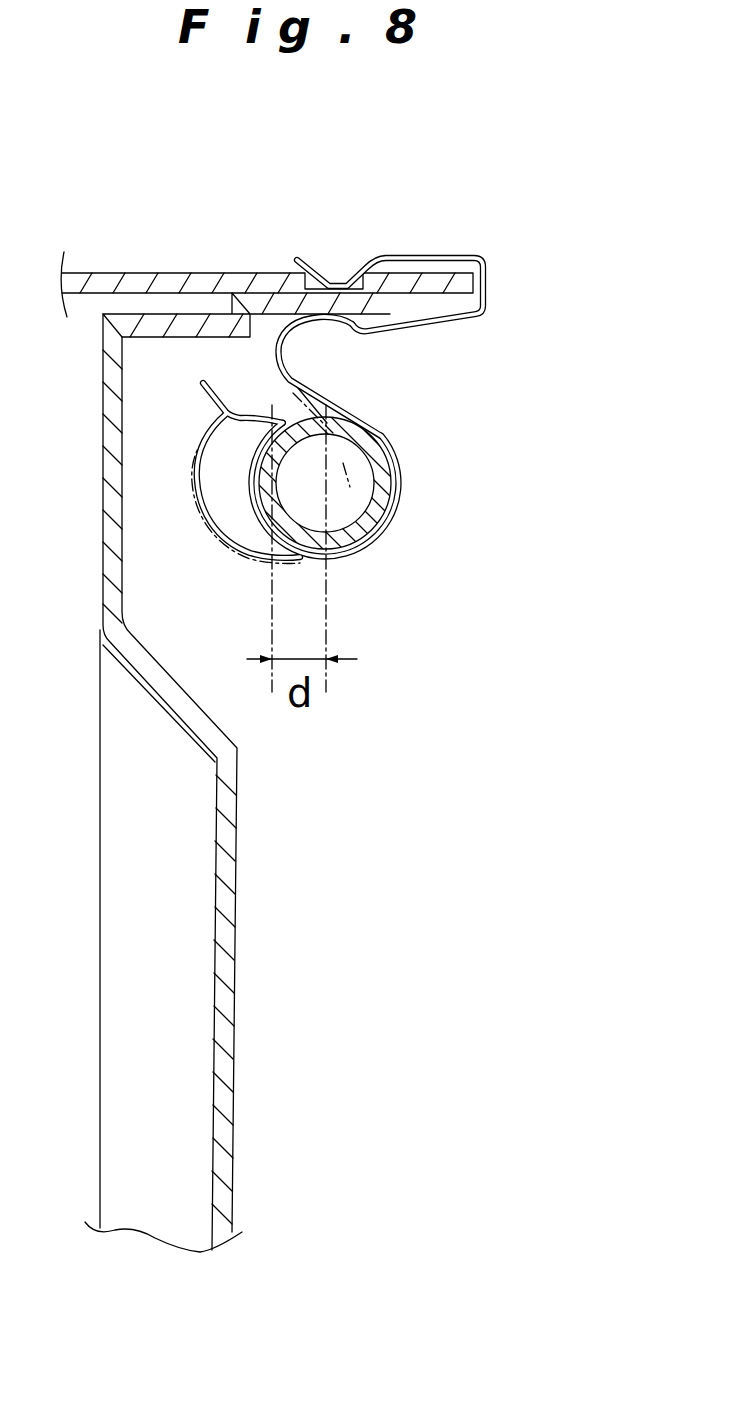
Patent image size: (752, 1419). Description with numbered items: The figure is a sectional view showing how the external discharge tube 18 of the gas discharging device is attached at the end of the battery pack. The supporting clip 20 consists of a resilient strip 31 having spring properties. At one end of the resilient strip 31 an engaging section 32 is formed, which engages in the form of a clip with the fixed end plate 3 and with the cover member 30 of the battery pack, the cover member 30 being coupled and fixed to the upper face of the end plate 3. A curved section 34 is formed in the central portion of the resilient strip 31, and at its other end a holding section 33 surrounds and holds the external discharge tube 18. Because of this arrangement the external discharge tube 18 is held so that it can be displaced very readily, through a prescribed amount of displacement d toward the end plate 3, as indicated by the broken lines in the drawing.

The cover member 30 is at (168, 281).
The engaging section 32 is at (487, 270).
The curved section 34 is at (277, 348).
The resilient strip 31 is at (318, 388).
The supporting clip 20 is at (352, 402).
The external discharge tube 18 is at (380, 493).
The holding section 33 is at (358, 550).
The end plate 3 is at (217, 953).